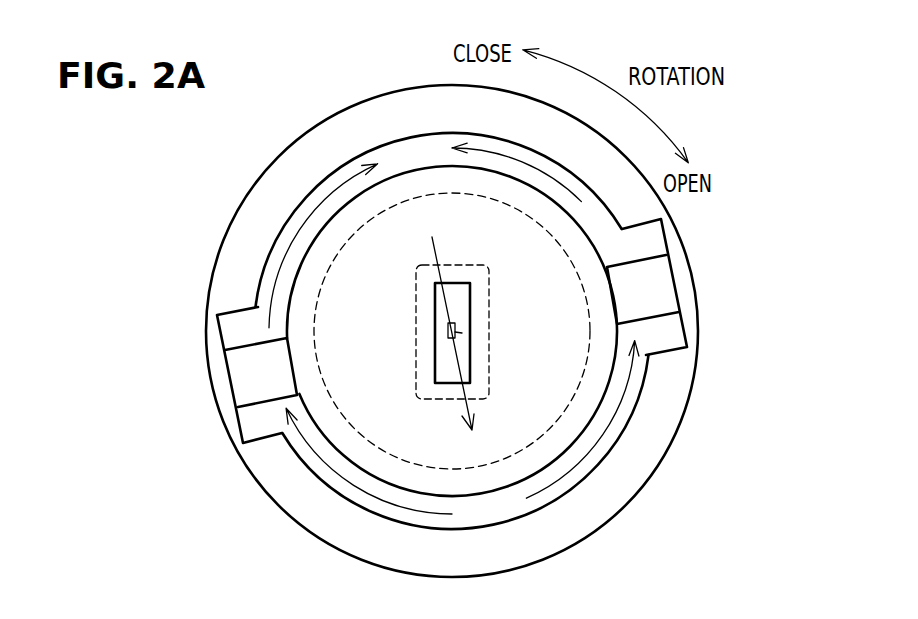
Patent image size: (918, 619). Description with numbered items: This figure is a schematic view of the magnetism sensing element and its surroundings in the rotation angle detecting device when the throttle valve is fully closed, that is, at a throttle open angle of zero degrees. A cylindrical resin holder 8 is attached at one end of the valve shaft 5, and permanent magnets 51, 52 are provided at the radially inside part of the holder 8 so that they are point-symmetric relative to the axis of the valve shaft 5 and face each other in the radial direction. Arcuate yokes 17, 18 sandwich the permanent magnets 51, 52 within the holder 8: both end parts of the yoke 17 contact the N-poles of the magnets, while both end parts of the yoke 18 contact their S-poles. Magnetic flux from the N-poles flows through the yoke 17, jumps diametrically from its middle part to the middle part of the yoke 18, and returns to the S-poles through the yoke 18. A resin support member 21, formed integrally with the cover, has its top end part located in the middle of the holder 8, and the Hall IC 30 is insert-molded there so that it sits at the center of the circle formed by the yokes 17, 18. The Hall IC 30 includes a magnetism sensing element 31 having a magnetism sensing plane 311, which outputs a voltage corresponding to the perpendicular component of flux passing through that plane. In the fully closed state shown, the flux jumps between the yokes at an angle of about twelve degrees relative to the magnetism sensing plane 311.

The valve shaft 5 is at (547, 430).
The holder 8 is at (300, 148).
The yoke 17 is at (407, 152).
The yoke 18 is at (493, 515).
The support member 21 is at (420, 370).
The Hall IC 30 is at (457, 292).
The magnetism sensing element 31 is at (462, 325).
The magnetism sensing plane 311 is at (462, 333).
The permanent magnet 51 is at (240, 377).
The permanent magnet 52 is at (672, 288).